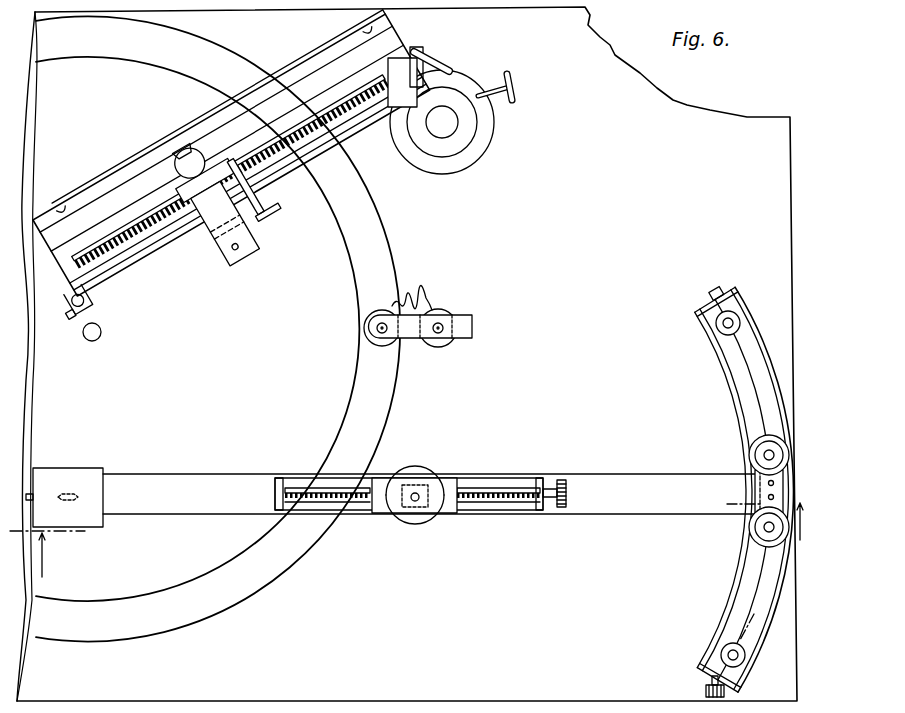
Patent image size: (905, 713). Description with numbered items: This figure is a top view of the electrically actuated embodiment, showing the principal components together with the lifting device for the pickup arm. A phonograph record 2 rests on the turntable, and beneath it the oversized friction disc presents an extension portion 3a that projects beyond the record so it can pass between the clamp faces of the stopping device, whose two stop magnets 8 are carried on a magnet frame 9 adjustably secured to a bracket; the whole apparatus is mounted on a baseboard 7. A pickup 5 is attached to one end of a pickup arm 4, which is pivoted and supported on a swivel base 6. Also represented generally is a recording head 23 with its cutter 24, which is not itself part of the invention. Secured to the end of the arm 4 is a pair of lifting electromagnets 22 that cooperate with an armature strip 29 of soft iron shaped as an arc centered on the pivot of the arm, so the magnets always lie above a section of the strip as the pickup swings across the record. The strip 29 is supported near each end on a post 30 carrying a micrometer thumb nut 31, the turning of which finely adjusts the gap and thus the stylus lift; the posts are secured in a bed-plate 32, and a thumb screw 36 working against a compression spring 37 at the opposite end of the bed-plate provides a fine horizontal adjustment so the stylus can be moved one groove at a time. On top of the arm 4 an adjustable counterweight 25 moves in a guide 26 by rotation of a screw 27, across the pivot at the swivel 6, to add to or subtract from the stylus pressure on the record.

The phonograph record 2 is at (327, 255).
The friction disc extension 3a is at (385, 272).
The pickup arm 4 is at (210, 477).
The pickup 5 is at (95, 467).
The swivel base 6 is at (420, 520).
The baseboard 7 is at (408, 548).
The electromagnets 8 is at (400, 350).
The magnet frame 9 is at (746, 621).
The lifting electromagnets 22 is at (750, 457).
The recording head 23 is at (504, 136).
The cutter 24 is at (222, 262).
The counterweight 25 is at (447, 478).
The guide 26 is at (507, 507).
The screw 27 is at (530, 498).
The armature strip 29 is at (750, 392).
The post 30 is at (737, 317).
The micrometer thumb nuts 31 is at (713, 325).
The bed-plate 32 is at (723, 367).
The thumb screw 36 is at (707, 687).
The compression spring 37 is at (707, 313).